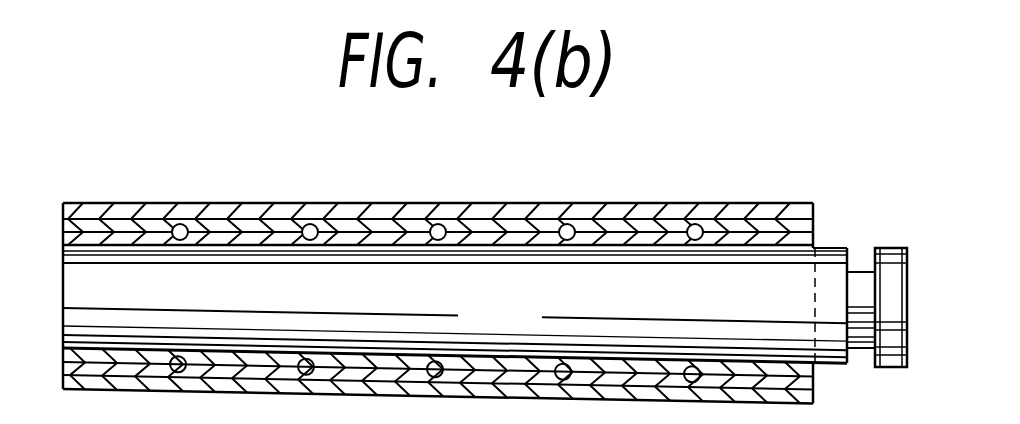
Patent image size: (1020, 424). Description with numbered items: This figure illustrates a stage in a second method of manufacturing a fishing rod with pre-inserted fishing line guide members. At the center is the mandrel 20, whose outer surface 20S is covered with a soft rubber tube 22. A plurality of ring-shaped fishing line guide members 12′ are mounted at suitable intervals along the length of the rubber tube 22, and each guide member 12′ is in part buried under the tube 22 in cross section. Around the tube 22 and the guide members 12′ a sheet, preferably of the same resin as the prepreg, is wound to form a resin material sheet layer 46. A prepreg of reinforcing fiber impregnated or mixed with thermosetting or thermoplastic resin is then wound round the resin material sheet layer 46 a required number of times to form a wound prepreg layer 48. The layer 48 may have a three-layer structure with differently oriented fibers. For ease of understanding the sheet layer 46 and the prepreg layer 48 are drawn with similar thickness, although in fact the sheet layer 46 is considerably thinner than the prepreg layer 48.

The wound prepreg layer 48 is at (140, 211).
The resin material sheet layer 46 is at (387, 212).
The soft rubber tube 22 is at (475, 240).
The ring-shaped fishing line guide member 12′ is at (187, 227).
The outer surface of mandrel 20S is at (607, 248).
The mandrel 20 is at (516, 319).